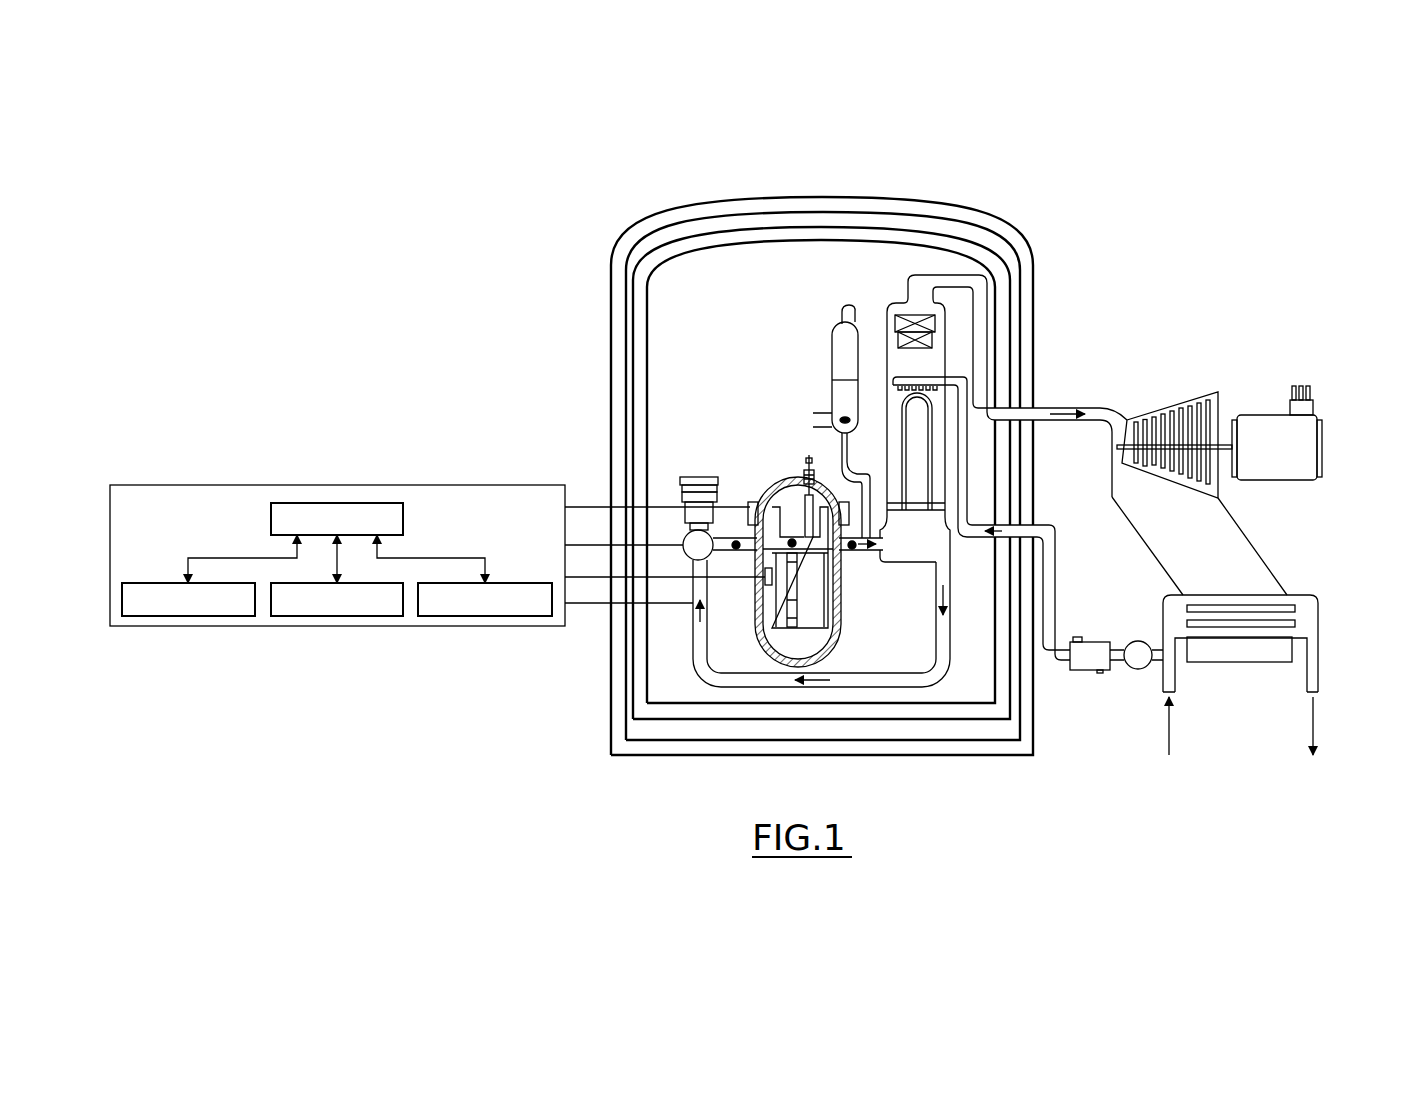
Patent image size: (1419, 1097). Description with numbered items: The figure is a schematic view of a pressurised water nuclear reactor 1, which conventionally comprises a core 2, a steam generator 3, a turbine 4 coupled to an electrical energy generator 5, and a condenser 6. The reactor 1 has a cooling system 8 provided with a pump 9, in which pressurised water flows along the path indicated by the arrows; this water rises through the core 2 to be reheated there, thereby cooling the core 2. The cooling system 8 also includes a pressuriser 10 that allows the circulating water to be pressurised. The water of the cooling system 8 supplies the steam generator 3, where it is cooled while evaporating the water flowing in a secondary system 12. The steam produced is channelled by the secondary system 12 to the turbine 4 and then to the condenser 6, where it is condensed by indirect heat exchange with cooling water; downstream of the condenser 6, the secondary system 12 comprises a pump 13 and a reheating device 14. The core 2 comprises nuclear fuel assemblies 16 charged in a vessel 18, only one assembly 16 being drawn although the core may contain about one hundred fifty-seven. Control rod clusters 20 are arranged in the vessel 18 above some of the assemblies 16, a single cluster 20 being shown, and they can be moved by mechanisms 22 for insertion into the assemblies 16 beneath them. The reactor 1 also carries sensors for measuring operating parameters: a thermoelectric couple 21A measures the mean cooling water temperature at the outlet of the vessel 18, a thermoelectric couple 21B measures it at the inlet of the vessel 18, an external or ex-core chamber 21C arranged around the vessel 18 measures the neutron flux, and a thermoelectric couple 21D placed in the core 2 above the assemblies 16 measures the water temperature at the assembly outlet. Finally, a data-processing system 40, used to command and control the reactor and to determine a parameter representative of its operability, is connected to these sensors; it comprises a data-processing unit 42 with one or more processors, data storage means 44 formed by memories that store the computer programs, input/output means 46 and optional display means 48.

The pressurised water nuclear reactor 1 is at (1058, 258).
The core 2 is at (833, 587).
The steam generator 3 is at (890, 292).
The turbine 4 is at (1190, 390).
The electrical energy generator 5 is at (1330, 453).
The condenser 6 is at (1272, 570).
The cooling system 8 is at (686, 635).
The pump 9 is at (672, 475).
The pressuriser 10 is at (823, 358).
The secondary system 12 is at (1080, 402).
The pump 13 is at (1137, 675).
The reheating device 14 is at (1096, 637).
The nuclear fuel assembly 16 is at (786, 616).
The vessel 18 is at (852, 648).
The control rod cluster 20 is at (856, 481).
The thermoelectric couple 21A is at (873, 545).
The thermoelectric couple 21B is at (766, 548).
The external chamber 21C is at (764, 578).
The thermoelectric couple 21D is at (805, 479).
The mechanism 22 is at (800, 457).
The data-processing system 40 is at (440, 485).
The data-processing unit 42 is at (337, 519).
The data storage means 44 is at (188, 599).
The input/output means 46 is at (337, 599).
The display means 48 is at (485, 599).